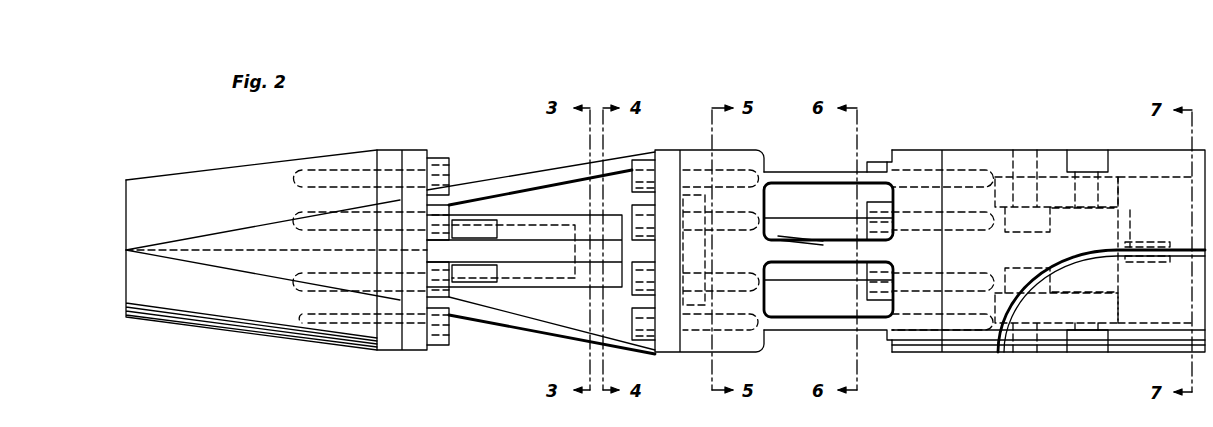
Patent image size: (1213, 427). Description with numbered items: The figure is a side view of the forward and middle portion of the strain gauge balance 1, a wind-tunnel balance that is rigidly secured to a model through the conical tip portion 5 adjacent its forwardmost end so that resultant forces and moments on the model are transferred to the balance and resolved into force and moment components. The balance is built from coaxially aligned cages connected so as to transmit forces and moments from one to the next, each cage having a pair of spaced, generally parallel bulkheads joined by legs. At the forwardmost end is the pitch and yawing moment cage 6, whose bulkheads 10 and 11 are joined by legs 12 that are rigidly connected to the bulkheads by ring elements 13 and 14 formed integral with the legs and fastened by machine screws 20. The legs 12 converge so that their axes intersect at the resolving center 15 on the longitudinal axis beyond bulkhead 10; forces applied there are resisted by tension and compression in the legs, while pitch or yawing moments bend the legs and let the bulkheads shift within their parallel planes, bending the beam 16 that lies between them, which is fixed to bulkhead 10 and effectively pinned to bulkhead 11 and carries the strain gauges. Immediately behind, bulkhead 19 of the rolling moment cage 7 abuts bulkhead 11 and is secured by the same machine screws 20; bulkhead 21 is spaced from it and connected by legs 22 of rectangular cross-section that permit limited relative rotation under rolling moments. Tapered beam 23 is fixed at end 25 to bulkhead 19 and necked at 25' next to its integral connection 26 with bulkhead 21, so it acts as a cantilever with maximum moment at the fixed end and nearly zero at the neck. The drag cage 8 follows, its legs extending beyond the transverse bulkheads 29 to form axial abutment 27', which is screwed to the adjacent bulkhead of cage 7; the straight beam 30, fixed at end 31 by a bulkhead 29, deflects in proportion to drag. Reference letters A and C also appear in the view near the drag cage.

The strain gauge balance 1 is at (238, 322).
The conical tip portion 5 is at (255, 167).
The pitch and yawing moment cage 6 is at (499, 212).
The rolling moment cage 7 is at (800, 298).
The drag cage 8 is at (1148, 336).
The bulkhead 10 is at (388, 352).
The bulkhead 11 is at (700, 350).
The legs 12 is at (512, 318).
The ring element 13 is at (655, 350).
The ring element 14 is at (420, 352).
The resolving center 15 is at (150, 250).
The beam 16 is at (588, 284).
The bulkhead 19 is at (746, 156).
The machine screws 20 is at (645, 168).
The bulkhead 21 is at (920, 158).
The legs 22 is at (800, 183).
The tapered beam 23 is at (843, 252).
The fixed end 25 is at (828, 213).
The neck 25' is at (820, 233).
The integral connection 26 is at (880, 250).
The axial abutment 27' is at (1048, 354).
The transverse bulkheads 29 is at (1056, 251).
The straight beam 30 is at (1175, 235).
The end 31 is at (1120, 247).
The point A is at (1130, 233).
The point C is at (1142, 268).